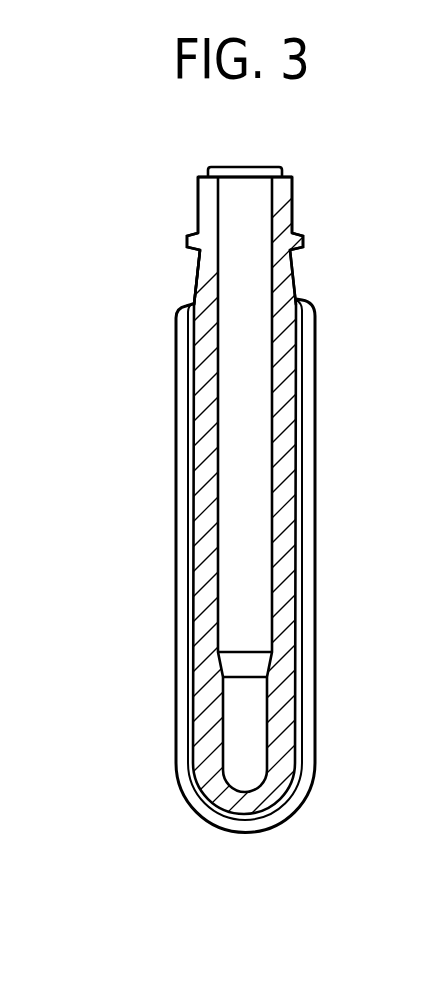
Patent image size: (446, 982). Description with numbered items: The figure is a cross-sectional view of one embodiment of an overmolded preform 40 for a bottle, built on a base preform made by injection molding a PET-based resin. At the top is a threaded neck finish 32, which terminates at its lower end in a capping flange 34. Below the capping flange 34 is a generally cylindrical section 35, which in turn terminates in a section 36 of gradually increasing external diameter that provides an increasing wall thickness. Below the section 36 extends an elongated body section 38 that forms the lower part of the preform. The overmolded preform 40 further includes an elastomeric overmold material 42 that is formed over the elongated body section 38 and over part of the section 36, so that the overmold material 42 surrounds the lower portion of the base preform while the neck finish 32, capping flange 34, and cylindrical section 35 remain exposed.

The overmolded preform 40 is at (124, 149).
The threaded neck finish 32 is at (293, 204).
The capping flange 34 is at (303, 243).
The section of gradually increasing external diameter 36 is at (296, 299).
The generally cylindrical section 35 is at (200, 275).
The elongated body section 38 is at (292, 470).
The elastomeric overmold material 42 is at (315, 577).